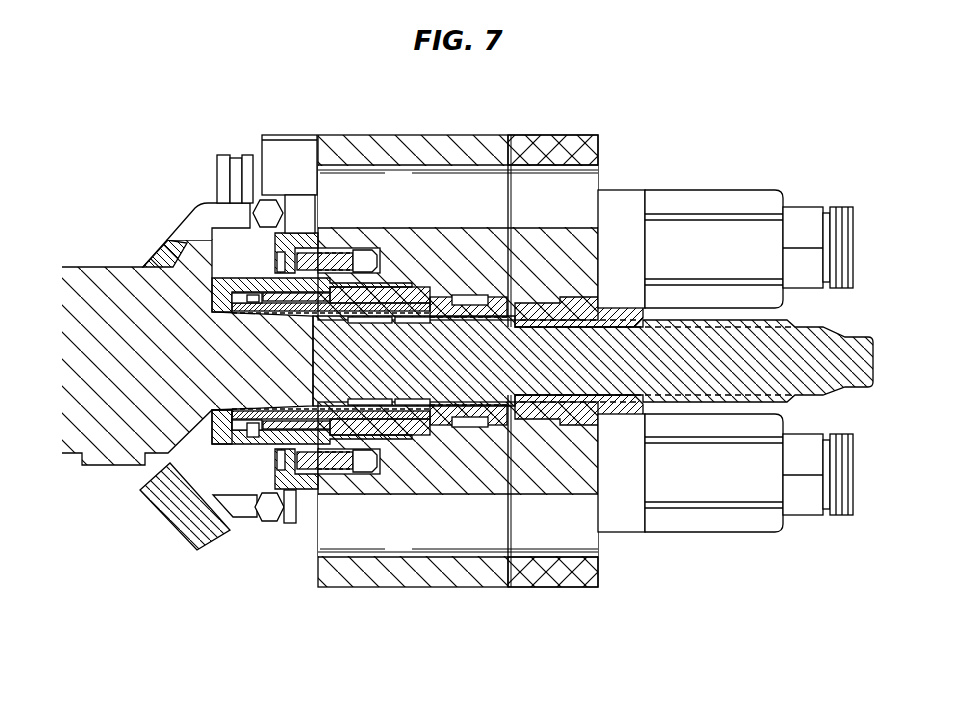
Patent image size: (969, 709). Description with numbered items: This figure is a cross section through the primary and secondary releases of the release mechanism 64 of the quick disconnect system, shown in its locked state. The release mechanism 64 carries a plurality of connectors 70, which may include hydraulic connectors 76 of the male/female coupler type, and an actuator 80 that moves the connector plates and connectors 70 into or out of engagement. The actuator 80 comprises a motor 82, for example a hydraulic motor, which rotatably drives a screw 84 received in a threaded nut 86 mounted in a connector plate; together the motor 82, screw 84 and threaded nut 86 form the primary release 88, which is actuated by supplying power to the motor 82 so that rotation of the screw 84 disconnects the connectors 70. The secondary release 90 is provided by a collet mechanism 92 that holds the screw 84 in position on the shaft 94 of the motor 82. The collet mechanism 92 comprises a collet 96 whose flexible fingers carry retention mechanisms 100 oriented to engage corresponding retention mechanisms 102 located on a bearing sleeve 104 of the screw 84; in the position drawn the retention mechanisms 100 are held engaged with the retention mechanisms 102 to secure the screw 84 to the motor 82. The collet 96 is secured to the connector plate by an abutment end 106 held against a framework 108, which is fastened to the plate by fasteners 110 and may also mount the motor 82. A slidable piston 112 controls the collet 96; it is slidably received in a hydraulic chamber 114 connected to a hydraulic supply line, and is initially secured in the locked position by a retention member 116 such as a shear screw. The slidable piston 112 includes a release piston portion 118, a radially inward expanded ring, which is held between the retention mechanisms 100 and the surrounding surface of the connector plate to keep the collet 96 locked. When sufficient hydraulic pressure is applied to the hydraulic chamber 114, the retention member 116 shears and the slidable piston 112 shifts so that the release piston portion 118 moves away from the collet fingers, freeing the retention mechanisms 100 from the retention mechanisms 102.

The release mechanism 64 is at (655, 157).
The connectors 70 is at (770, 172).
The hydraulic connectors 76 is at (856, 235).
The actuator 80 is at (88, 257).
The motor 82 is at (100, 372).
The screw 84 is at (681, 371).
The threaded nut 86 is at (613, 423).
The primary release 88 is at (583, 437).
The secondary release 90 is at (447, 421).
The collet mechanism 92 is at (237, 450).
The shaft 94 is at (258, 293).
The collet 96 is at (370, 409).
The retention mechanisms 100 is at (478, 294).
The retention mechanisms 102 is at (458, 328).
The bearing sleeve 104 is at (358, 437).
The abutment end 106 is at (215, 293).
The framework 108 is at (243, 278).
The fasteners 110 is at (300, 237).
The slidable piston 112 is at (428, 440).
The hydraulic chamber 114 is at (335, 287).
The retention member 116 is at (253, 438).
The release piston portion 118 is at (482, 432).